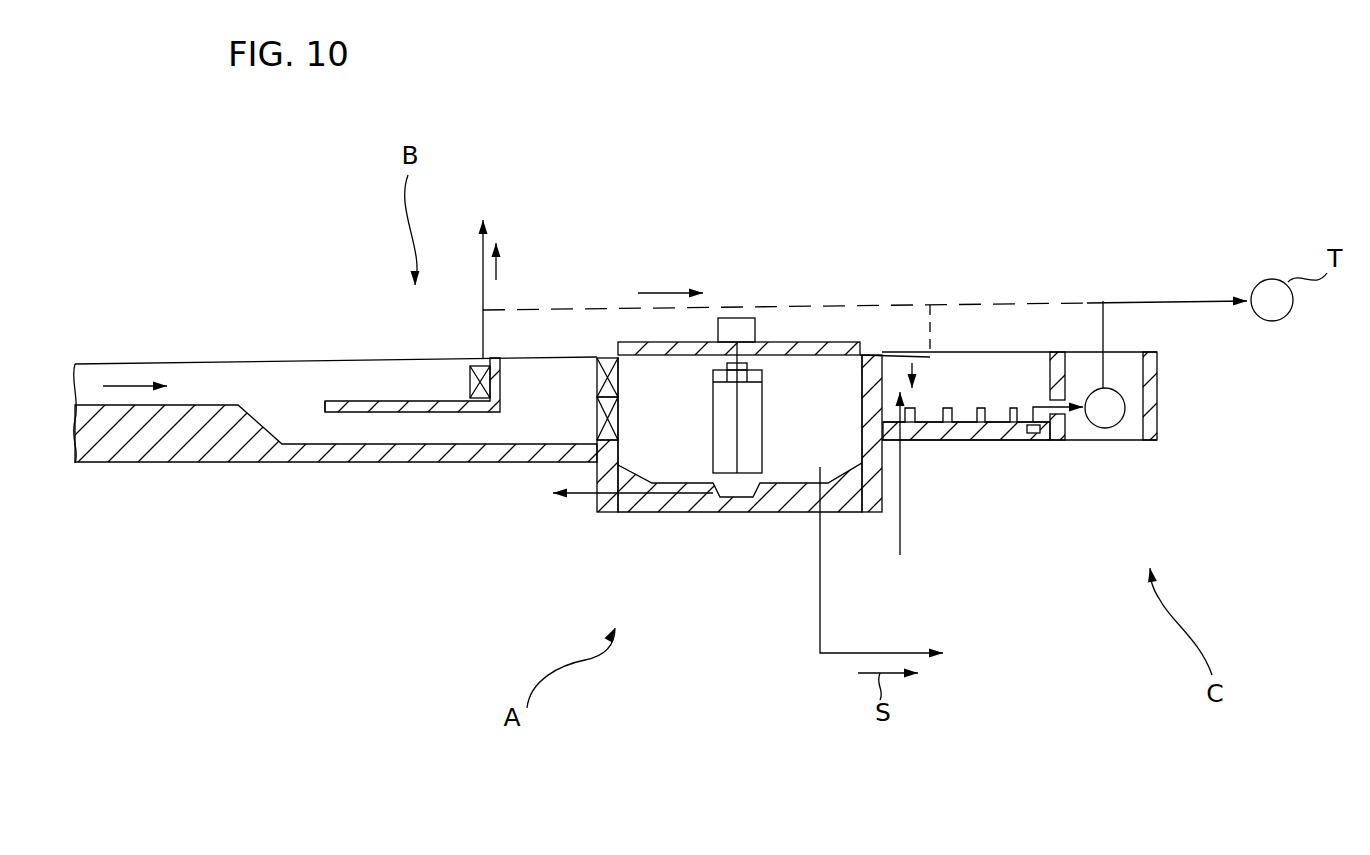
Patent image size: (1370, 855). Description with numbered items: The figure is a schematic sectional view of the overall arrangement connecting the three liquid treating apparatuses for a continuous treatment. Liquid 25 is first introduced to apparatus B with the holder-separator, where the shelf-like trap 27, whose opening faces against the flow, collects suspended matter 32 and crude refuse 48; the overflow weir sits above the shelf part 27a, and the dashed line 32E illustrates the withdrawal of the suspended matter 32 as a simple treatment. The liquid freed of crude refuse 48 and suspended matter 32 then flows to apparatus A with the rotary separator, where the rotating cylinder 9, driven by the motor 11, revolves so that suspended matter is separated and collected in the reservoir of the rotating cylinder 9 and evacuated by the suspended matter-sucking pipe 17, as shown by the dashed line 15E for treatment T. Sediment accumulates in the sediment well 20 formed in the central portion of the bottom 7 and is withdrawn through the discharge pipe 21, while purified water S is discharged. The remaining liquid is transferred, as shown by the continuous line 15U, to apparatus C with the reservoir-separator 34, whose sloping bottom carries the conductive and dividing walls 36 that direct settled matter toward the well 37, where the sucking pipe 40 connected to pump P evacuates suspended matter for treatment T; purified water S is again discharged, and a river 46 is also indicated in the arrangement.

The liquid 25 is at (130, 386).
The shelf-like trap 27 is at (398, 372).
The shelf part 27a is at (340, 400).
The crude refuse 48 is at (497, 265).
The dashed line 32E is at (585, 308).
The suspended matter 32 is at (675, 290).
The motor 11 is at (738, 318).
The suspended matter-sucking pipe 17 is at (833, 348).
The rotating cylinder 9 is at (713, 408).
The bottom 7 is at (690, 484).
The discharge pipe 21 is at (585, 498).
The sediment well 20 is at (773, 513).
The reservoir-separator 34 is at (1020, 383).
The conductive and dividing walls 36 is at (948, 408).
The well 37 is at (1033, 442).
The dashed line 15E is at (933, 330).
The continuous line 15U is at (917, 368).
The river 46 is at (900, 533).
The sucking pipe 40 is at (1107, 372).